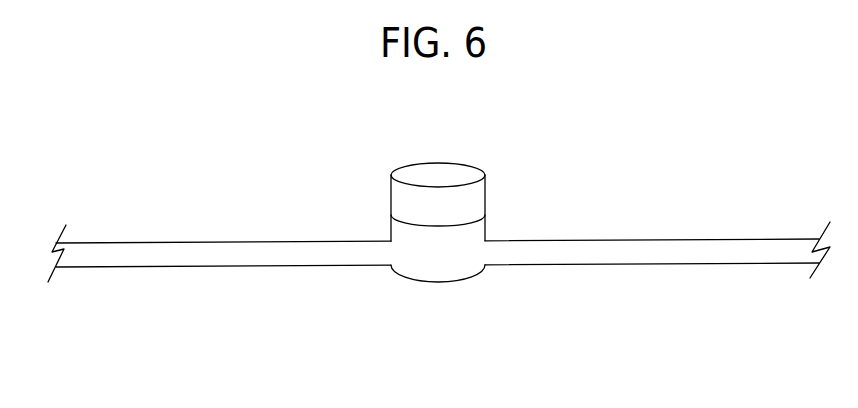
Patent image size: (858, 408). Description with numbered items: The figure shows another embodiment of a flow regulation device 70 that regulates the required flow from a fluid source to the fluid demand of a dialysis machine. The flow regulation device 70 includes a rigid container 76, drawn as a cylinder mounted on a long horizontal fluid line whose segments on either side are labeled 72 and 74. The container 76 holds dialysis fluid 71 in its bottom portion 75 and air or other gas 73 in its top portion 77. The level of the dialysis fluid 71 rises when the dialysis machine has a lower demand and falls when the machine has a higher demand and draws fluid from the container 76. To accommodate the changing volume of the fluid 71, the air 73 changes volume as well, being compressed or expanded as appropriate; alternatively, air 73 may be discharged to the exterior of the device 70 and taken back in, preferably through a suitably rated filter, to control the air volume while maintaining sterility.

The flow regulation device 70 is at (508, 132).
The dialysis fluid 71 is at (463, 243).
The first strip 72 is at (343, 253).
The air 73 is at (470, 200).
The second strip 74 is at (520, 250).
The bottom portion 75 is at (440, 263).
The rigid container 76 is at (390, 197).
The top portion 77 is at (425, 170).